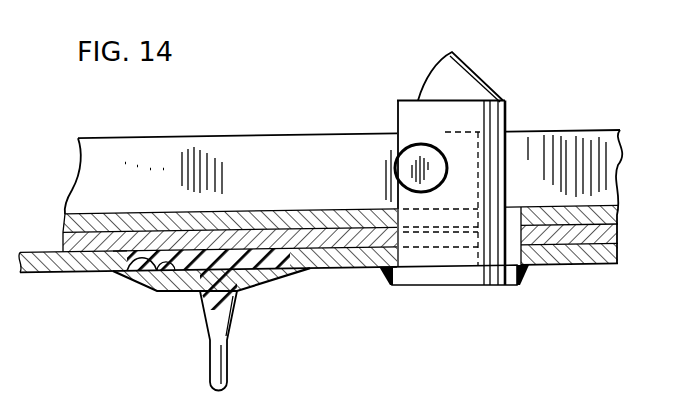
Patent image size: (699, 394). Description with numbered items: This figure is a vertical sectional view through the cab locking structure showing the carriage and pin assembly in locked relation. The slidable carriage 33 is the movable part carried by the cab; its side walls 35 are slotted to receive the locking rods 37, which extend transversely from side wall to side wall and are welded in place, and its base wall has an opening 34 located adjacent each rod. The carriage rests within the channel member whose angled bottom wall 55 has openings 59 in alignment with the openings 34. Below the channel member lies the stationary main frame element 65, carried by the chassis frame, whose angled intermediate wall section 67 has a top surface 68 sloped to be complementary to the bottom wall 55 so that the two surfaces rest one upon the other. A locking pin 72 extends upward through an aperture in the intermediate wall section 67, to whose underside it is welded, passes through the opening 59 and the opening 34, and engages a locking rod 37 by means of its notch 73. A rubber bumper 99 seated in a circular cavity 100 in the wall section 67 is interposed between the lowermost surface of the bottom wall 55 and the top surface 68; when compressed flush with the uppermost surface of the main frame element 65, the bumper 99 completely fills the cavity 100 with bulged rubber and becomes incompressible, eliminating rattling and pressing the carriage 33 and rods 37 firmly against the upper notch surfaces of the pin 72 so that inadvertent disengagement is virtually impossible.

The slidable carriage 33 is at (603, 127).
The opening 34 is at (400, 207).
The side wall 35 is at (222, 136).
The locking rod 37 is at (410, 167).
The bottom wall 55 is at (83, 253).
The opening 59 is at (501, 284).
The main frame element 65 is at (566, 271).
The intermediate wall section 67 is at (352, 268).
The top surface 68 is at (111, 251).
The locking pin 72 is at (488, 119).
The notch 73 is at (408, 143).
The rubber bumper 99 is at (173, 262).
The circular cavity 100 is at (147, 261).